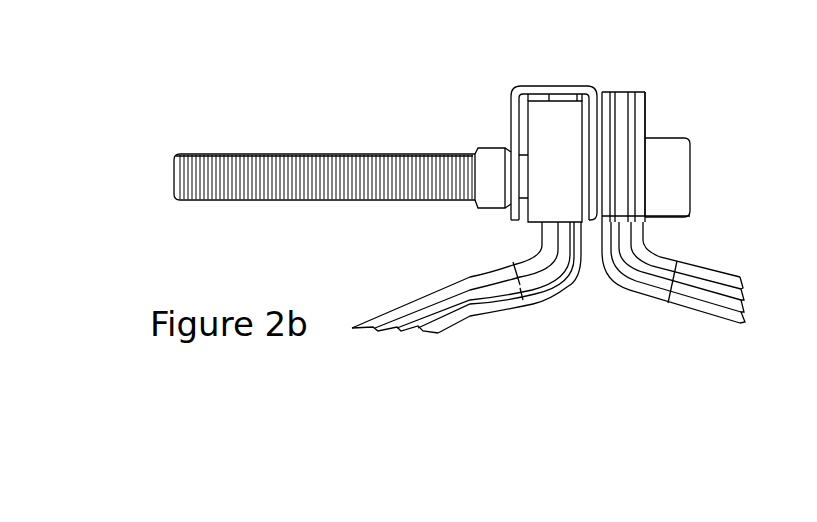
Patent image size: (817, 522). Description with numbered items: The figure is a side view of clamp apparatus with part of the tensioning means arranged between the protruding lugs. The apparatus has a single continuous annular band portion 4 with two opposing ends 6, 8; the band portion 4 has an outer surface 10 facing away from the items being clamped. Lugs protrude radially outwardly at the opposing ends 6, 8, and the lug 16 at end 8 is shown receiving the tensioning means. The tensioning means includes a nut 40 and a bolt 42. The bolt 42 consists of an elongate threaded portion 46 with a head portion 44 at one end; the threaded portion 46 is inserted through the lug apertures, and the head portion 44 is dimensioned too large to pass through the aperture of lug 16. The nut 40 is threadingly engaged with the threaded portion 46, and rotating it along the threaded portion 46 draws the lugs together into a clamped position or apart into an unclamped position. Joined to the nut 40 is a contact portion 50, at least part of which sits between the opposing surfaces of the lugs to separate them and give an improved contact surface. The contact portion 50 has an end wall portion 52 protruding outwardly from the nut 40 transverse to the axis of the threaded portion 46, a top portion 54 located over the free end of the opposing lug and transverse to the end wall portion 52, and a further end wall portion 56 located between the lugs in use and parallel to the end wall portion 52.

The band portion 4 is at (399, 276).
The end 6 is at (565, 291).
The end 8 is at (620, 285).
The outer surface 10 is at (702, 257).
The lug 16 is at (643, 123).
The nut 40 is at (490, 160).
The bolt 42 is at (354, 148).
The head portion 44 is at (678, 175).
The threaded portion 46 is at (193, 154).
The contact portion 50 is at (557, 86).
The end wall portion 52 is at (512, 113).
The top portion 54 is at (523, 85).
The further end wall portion 56 is at (600, 128).